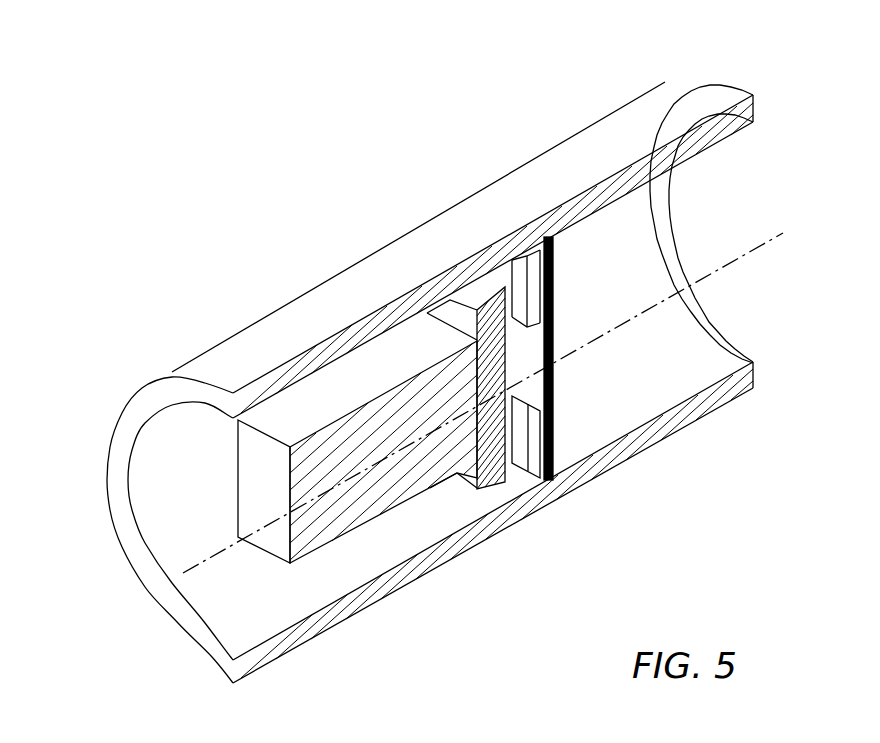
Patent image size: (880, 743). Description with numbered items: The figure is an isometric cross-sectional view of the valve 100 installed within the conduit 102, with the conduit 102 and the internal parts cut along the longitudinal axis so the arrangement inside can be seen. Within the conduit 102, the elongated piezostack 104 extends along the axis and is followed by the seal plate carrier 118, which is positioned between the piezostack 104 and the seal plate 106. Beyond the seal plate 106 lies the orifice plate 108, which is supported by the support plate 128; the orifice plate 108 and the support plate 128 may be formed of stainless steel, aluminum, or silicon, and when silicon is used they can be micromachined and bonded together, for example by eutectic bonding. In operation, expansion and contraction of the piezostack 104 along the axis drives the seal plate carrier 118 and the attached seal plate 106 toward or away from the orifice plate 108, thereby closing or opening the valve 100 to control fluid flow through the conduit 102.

The valve 100 is at (140, 288).
The conduit 102 is at (656, 114).
The piezostack 104 is at (362, 505).
The seal plate 106 is at (520, 468).
The orifice plate 108 is at (533, 343).
The seal plate carrier 118 is at (455, 470).
The support plate 128 is at (550, 330).